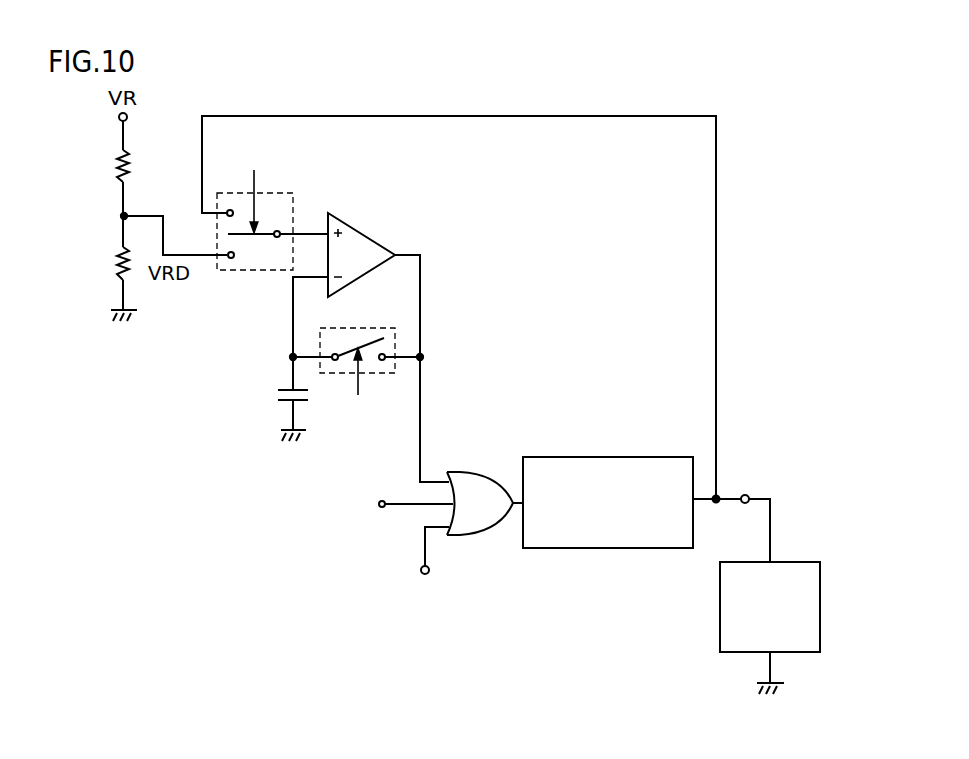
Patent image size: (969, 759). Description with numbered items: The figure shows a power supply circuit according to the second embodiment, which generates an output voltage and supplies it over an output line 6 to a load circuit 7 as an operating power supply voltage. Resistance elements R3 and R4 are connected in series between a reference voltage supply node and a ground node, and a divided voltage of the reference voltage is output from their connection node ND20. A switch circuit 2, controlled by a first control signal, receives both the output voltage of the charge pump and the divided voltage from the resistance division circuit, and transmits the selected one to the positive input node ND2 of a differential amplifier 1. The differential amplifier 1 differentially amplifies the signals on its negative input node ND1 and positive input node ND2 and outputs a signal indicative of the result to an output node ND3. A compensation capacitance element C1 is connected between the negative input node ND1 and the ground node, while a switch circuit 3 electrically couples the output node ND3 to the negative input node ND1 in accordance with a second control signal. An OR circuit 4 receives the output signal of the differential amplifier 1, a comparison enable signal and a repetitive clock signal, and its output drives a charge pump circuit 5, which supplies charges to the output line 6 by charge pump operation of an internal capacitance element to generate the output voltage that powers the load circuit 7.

The differential amplifier 1 is at (362, 234).
The switch circuit 2 is at (230, 271).
The switch circuit 3 is at (385, 328).
The OR circuit 4 is at (496, 480).
The charge pump circuit 5 is at (615, 455).
The output line 6 is at (745, 503).
The load circuit 7 is at (800, 562).
The resistance element R3 is at (109, 166).
The resistance element R4 is at (109, 263).
The capacitance element C1 is at (291, 389).
The connection node ND20 is at (120, 216).
The negative input node ND1 is at (292, 277).
The positive input node ND2 is at (310, 232).
The output node ND3 is at (420, 254).